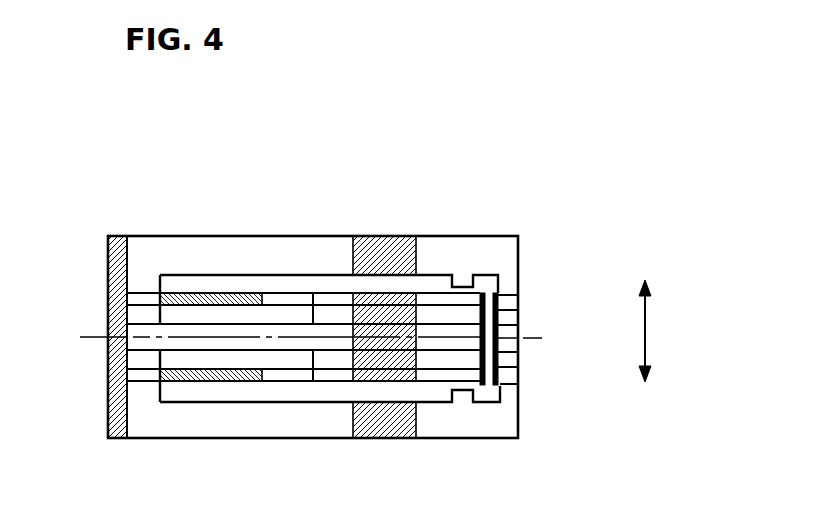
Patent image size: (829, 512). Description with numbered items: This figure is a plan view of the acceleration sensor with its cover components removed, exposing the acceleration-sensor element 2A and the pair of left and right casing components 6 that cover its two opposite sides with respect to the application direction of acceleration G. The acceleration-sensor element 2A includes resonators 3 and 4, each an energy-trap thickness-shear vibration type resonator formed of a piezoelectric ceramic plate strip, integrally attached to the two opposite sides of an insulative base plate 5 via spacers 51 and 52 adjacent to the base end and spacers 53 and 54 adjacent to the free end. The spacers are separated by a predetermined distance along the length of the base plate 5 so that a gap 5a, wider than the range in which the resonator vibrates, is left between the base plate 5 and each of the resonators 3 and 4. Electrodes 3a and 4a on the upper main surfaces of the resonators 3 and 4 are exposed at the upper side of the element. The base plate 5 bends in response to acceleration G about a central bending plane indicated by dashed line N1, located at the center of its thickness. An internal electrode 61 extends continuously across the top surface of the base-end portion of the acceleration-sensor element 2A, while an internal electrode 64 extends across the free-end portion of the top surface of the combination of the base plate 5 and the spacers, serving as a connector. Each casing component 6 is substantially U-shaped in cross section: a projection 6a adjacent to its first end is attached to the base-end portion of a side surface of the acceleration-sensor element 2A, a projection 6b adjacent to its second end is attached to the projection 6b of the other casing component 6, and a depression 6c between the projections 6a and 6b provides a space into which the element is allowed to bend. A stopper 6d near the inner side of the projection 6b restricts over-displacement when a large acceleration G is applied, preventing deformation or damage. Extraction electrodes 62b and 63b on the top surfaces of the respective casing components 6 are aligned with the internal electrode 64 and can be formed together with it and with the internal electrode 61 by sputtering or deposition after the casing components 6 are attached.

The casing component 6 is at (487, 246).
The internal electrode 61 is at (108, 253).
The depression 6c is at (330, 275).
The extraction electrode 63b is at (395, 243).
The extraction electrode 62b is at (383, 430).
The internal electrode 64 is at (423, 320).
The resonator 4 is at (243, 289).
The resonator 3 is at (272, 383).
The electrode 4a is at (211, 295).
The electrode 3a is at (219, 381).
The gap 5a is at (273, 313).
The base plate 5 is at (178, 320).
The spacer 52 is at (137, 312).
The spacer 51 is at (137, 358).
The acceleration-sensor element 2A is at (72, 295).
The spacer 54 is at (468, 318).
The spacer 53 is at (470, 360).
The dashed line N1 is at (532, 338).
The projection 6b is at (513, 393).
The stopper 6d is at (465, 397).
The projection 6a is at (145, 390).
The acceleration G is at (657, 331).